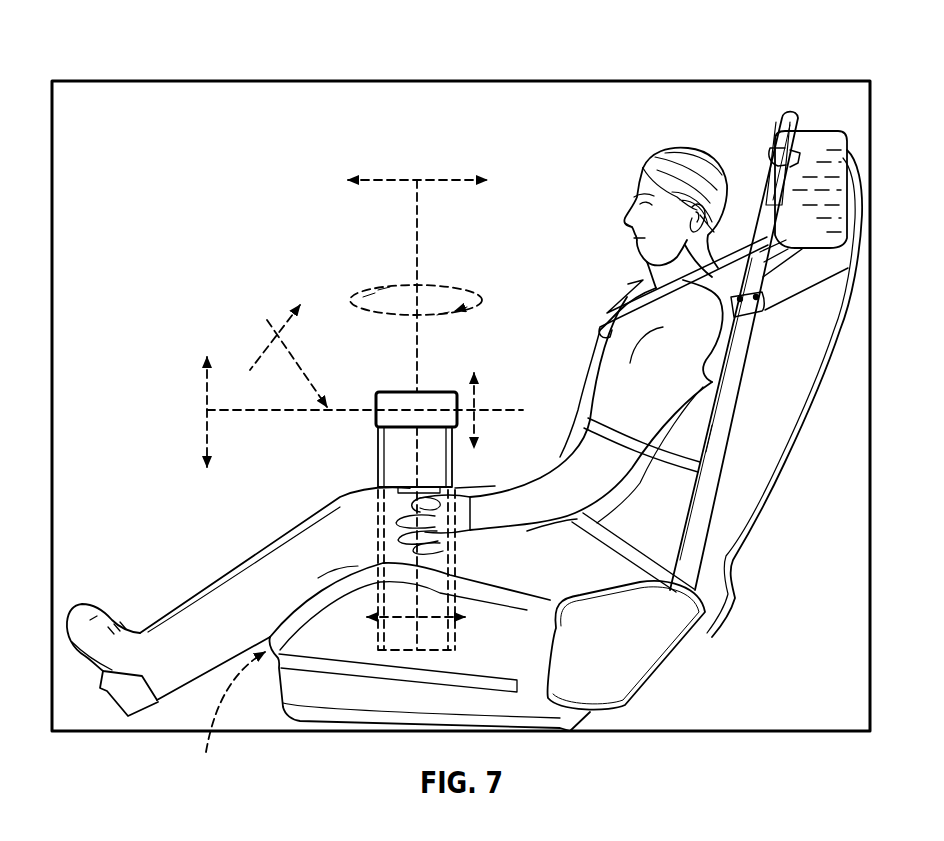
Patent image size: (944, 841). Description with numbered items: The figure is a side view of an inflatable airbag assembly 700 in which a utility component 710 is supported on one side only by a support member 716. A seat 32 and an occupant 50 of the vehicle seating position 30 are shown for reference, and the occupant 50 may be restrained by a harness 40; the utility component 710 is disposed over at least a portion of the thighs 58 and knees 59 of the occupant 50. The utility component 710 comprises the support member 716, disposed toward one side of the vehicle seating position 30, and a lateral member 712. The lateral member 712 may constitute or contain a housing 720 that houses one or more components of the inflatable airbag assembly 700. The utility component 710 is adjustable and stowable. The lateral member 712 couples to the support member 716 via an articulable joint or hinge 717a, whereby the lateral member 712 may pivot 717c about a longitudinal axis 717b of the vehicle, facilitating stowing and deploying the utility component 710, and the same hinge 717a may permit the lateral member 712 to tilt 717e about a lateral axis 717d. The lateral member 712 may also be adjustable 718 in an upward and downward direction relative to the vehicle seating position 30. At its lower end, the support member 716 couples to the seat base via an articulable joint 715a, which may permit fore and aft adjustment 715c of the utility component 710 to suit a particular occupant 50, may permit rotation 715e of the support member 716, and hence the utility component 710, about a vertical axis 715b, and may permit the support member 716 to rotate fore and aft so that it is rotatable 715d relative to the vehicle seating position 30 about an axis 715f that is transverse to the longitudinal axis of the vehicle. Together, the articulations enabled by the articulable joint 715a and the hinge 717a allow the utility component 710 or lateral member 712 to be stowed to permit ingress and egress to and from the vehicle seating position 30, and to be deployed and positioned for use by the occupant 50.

The inflatable airbag assembly 700 is at (120, 54).
The vehicle seating position 30 is at (548, 178).
The seat 32 is at (758, 498).
The harness 40 is at (720, 416).
The occupant 50 is at (630, 268).
The thighs 58 is at (525, 577).
The knees 59 is at (337, 500).
The utility component 710 is at (377, 462).
The lateral member 712 is at (395, 392).
The support member 716 is at (460, 470).
The upward and downward adjustment 718 is at (478, 392).
The housing 720 is at (389, 349).
The articulable joint 715a is at (222, 722).
The vertical axis 715b is at (440, 338).
The fore and aft adjustment 715c is at (397, 620).
The rotation of the support member 715d is at (402, 177).
The rotation about vertical axis 715e is at (452, 290).
The transverse axis 715f is at (548, 664).
The articulable joint or hinge 717a is at (377, 415).
The longitudinal axis 717b is at (355, 408).
The pivot 717c is at (267, 320).
The lateral axis 717d is at (445, 392).
The tilt 717e is at (207, 382).